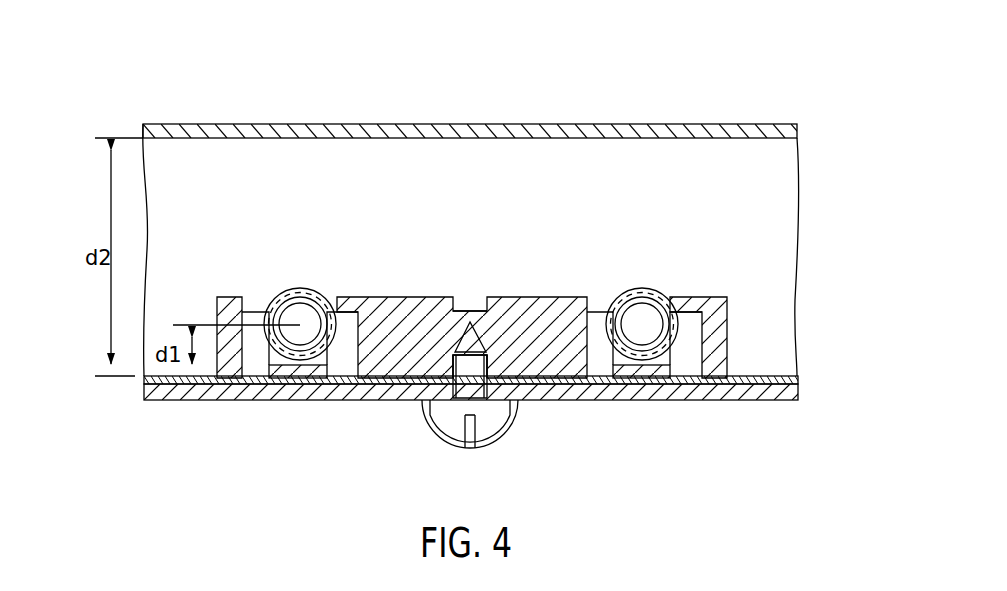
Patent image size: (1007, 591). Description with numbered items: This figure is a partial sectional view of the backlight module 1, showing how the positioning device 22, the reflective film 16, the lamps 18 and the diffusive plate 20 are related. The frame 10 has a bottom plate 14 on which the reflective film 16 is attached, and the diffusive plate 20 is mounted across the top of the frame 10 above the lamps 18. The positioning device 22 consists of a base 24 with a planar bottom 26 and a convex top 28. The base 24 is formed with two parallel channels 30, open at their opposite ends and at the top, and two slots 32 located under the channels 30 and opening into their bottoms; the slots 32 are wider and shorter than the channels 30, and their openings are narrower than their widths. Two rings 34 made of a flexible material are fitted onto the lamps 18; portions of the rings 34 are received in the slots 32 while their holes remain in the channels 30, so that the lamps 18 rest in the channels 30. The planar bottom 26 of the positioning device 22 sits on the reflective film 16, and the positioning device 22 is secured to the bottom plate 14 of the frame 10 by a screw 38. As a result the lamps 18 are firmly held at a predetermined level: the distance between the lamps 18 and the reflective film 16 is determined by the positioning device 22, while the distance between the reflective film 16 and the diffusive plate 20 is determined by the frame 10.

The backlight module 1 is at (686, 98).
The frame 10 is at (505, 406).
The bottom plate 14 is at (768, 397).
The reflective film 16 is at (775, 382).
The lamp 18 is at (303, 348).
The diffusive plate 20 is at (728, 132).
The positioning device 22 is at (742, 285).
The base 24 is at (423, 312).
The planar bottom 26 is at (400, 376).
The convex top 28 is at (532, 297).
The channel 30 is at (668, 292).
The slot 32 is at (337, 357).
The ring 34 is at (275, 345).
The screw 38 is at (495, 410).